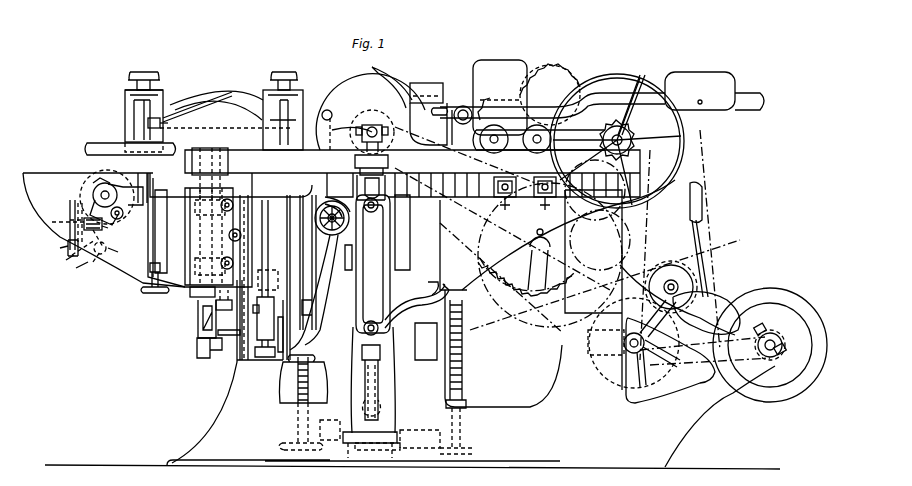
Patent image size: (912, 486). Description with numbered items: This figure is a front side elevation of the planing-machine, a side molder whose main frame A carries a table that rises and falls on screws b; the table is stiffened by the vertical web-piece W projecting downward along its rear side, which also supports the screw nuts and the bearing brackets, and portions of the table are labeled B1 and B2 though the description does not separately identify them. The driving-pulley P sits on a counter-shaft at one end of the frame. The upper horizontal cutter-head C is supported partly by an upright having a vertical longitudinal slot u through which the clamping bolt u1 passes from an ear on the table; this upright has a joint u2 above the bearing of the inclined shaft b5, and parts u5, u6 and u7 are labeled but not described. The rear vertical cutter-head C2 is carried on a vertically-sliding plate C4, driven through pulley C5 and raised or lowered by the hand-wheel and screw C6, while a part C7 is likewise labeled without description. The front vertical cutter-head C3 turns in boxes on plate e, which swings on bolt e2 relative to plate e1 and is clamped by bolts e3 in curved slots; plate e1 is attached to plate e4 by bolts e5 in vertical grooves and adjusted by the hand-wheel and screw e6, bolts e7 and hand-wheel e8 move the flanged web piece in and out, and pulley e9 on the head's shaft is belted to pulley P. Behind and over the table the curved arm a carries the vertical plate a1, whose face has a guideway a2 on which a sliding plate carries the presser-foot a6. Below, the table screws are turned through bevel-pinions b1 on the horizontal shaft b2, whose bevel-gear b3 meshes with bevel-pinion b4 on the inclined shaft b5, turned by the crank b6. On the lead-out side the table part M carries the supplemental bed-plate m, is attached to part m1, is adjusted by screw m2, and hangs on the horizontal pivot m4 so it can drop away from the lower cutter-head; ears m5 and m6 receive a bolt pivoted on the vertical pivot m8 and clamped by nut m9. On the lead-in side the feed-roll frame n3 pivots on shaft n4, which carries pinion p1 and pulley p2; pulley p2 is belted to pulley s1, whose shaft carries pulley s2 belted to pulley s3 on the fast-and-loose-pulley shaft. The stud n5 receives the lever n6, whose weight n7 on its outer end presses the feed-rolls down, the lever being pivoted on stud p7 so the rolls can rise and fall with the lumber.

The curved arm a is at (213, 100).
The vertical plate a1 is at (160, 90).
The vertical guideway a2 is at (158, 105).
The presser-foot a6 is at (120, 142).
The upper horizontal cutter-head C is at (105, 160).
The rear vertical cutter-head C2 is at (216, 148).
The front vertical cutter-head C3 is at (283, 111).
The vertically-sliding plate C4 is at (196, 312).
The pulley C5 is at (186, 291).
The hand-wheel and screw C6 is at (230, 345).
The bracket C7 is at (197, 334).
The part of the table M is at (104, 233).
The supplemental bed-plate m is at (92, 243).
The part m' m1 is at (92, 262).
The screw m2 is at (61, 262).
The horizontal pivot m4 is at (114, 227).
The ear m5 is at (56, 247).
The ear m6 is at (76, 271).
The vertical pivot m8 is at (122, 253).
The nut m9 is at (59, 223).
The panel B1 is at (200, 230).
The bed B2 is at (395, 184).
The vertical web-piece W is at (369, 262).
The plate e is at (265, 362).
The plate e1 is at (269, 290).
The bolt e2 is at (262, 279).
The bolts e3 is at (295, 269).
The plate e4 is at (314, 292).
The bolts e5 is at (315, 262).
The hand-wheel and screw e6 is at (312, 352).
The bolts e7 is at (352, 180).
The hand-wheel e8 is at (318, 200).
The pulley e9 is at (249, 311).
The vertical longitudinal slot u is at (383, 265).
The bolt u1 is at (383, 205).
The joint u2 is at (356, 325).
The block u5 is at (352, 257).
The pin u6 is at (388, 240).
The bar u7 is at (385, 225).
The screws b is at (395, 377).
The bevel-pinions b1 is at (330, 428).
The horizontal shaft b2 is at (388, 420).
The bevel-gear b3 is at (395, 452).
The bevel-pinion b4 is at (383, 400).
The inclined shaft b5 is at (382, 378).
The crank b6 is at (395, 350).
The frame n3 is at (552, 123).
The shaft n4 is at (617, 141).
The strap or stud n5 is at (500, 97).
The lever n6 is at (529, 88).
The weight n7 is at (714, 91).
The pinion p1 is at (632, 135).
The pulley p2 is at (640, 78).
The stud p7 is at (462, 106).
The main frame A is at (567, 271).
The pulley s1 is at (615, 342).
The pulley s2 is at (670, 360).
The pulley s3 is at (703, 313).
The driving-pulley P is at (770, 345).